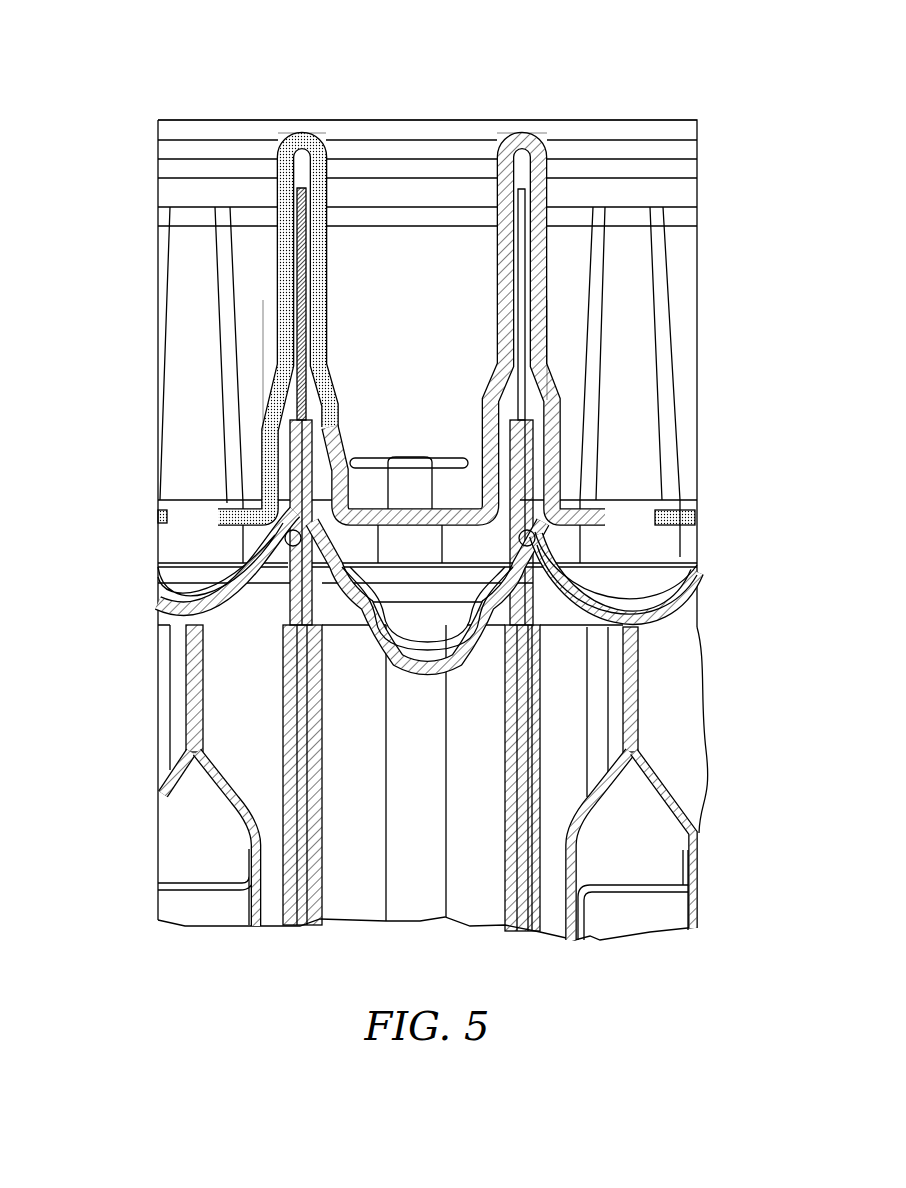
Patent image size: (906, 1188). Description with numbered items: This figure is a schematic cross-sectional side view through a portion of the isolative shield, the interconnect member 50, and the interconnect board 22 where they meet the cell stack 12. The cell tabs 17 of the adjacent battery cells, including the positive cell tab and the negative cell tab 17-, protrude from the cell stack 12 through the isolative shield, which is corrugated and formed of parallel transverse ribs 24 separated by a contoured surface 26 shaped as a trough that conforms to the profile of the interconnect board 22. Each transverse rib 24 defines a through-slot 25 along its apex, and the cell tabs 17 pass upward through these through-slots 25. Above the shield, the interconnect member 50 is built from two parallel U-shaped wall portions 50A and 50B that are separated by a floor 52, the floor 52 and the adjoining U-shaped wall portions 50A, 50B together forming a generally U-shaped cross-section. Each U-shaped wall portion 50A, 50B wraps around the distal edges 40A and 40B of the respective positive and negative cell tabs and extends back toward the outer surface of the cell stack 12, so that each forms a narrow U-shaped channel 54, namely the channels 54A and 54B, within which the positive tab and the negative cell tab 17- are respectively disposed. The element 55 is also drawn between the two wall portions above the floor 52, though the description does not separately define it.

The cell stack 12 is at (713, 818).
The cell tab 17 is at (297, 483).
The negative cell tab 17- is at (525, 388).
The interconnect board 22 is at (221, 168).
The transverse rib 24 is at (288, 518).
The through-slot 25 is at (293, 540).
The contoured surface 26 is at (163, 633).
The distal edge of positive cell tab 40A is at (293, 202).
The distal edge of negative cell tab 40B is at (532, 200).
The interconnect member 50 is at (677, 93).
The first U-shaped wall portion 50A is at (337, 250).
The second U-shaped wall portion 50B is at (565, 250).
The floor 52 is at (368, 510).
The U-shaped channel 54 is at (352, 150).
The first U-shaped channel 54A is at (283, 148).
The second U-shaped channel 54B is at (502, 148).
The support member 55 is at (427, 460).